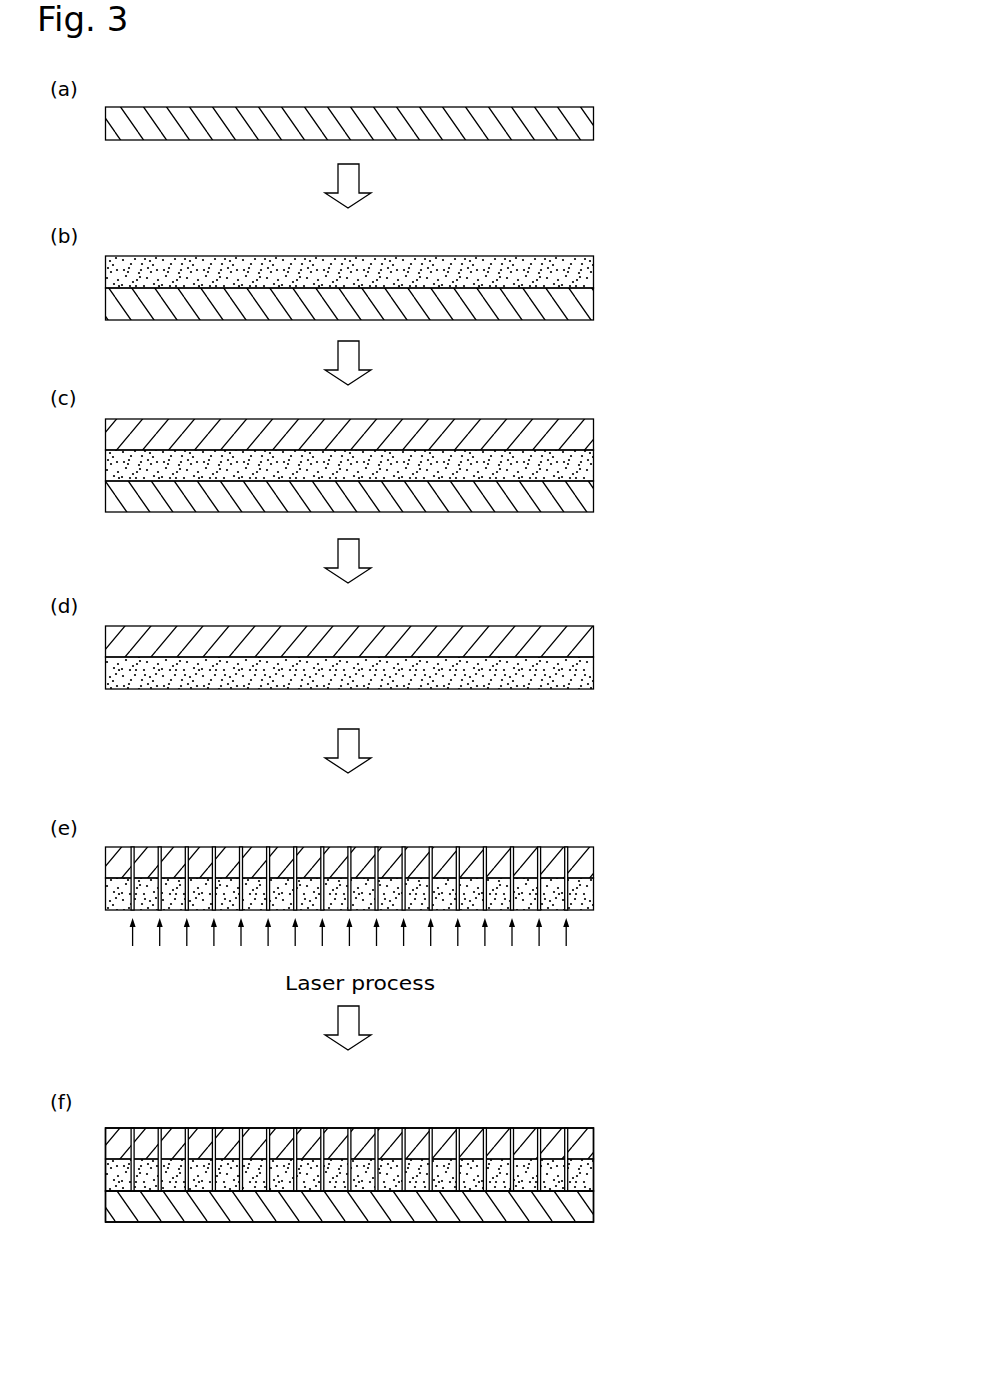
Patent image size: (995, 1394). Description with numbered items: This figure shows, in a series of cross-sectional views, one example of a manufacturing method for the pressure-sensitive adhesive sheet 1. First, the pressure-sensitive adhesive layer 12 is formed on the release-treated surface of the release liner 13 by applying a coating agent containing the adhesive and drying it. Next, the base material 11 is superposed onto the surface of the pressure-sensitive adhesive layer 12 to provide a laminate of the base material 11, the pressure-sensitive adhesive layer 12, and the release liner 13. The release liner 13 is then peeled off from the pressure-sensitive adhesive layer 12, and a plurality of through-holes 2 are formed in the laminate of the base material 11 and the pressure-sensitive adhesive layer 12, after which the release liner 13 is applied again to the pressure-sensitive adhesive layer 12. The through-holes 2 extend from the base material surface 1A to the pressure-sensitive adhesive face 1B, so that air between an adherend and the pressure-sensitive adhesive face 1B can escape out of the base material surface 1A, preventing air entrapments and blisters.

The pressure-sensitive adhesive sheet 1 is at (584, 1109).
The base material surface 1A is at (142, 1128).
The pressure-sensitive adhesive face 1B is at (137, 1193).
The through-holes 2 is at (459, 847).
The base material 11 is at (594, 428).
The pressure-sensitive adhesive layer 12 is at (594, 268).
The release liner 13 is at (594, 118).